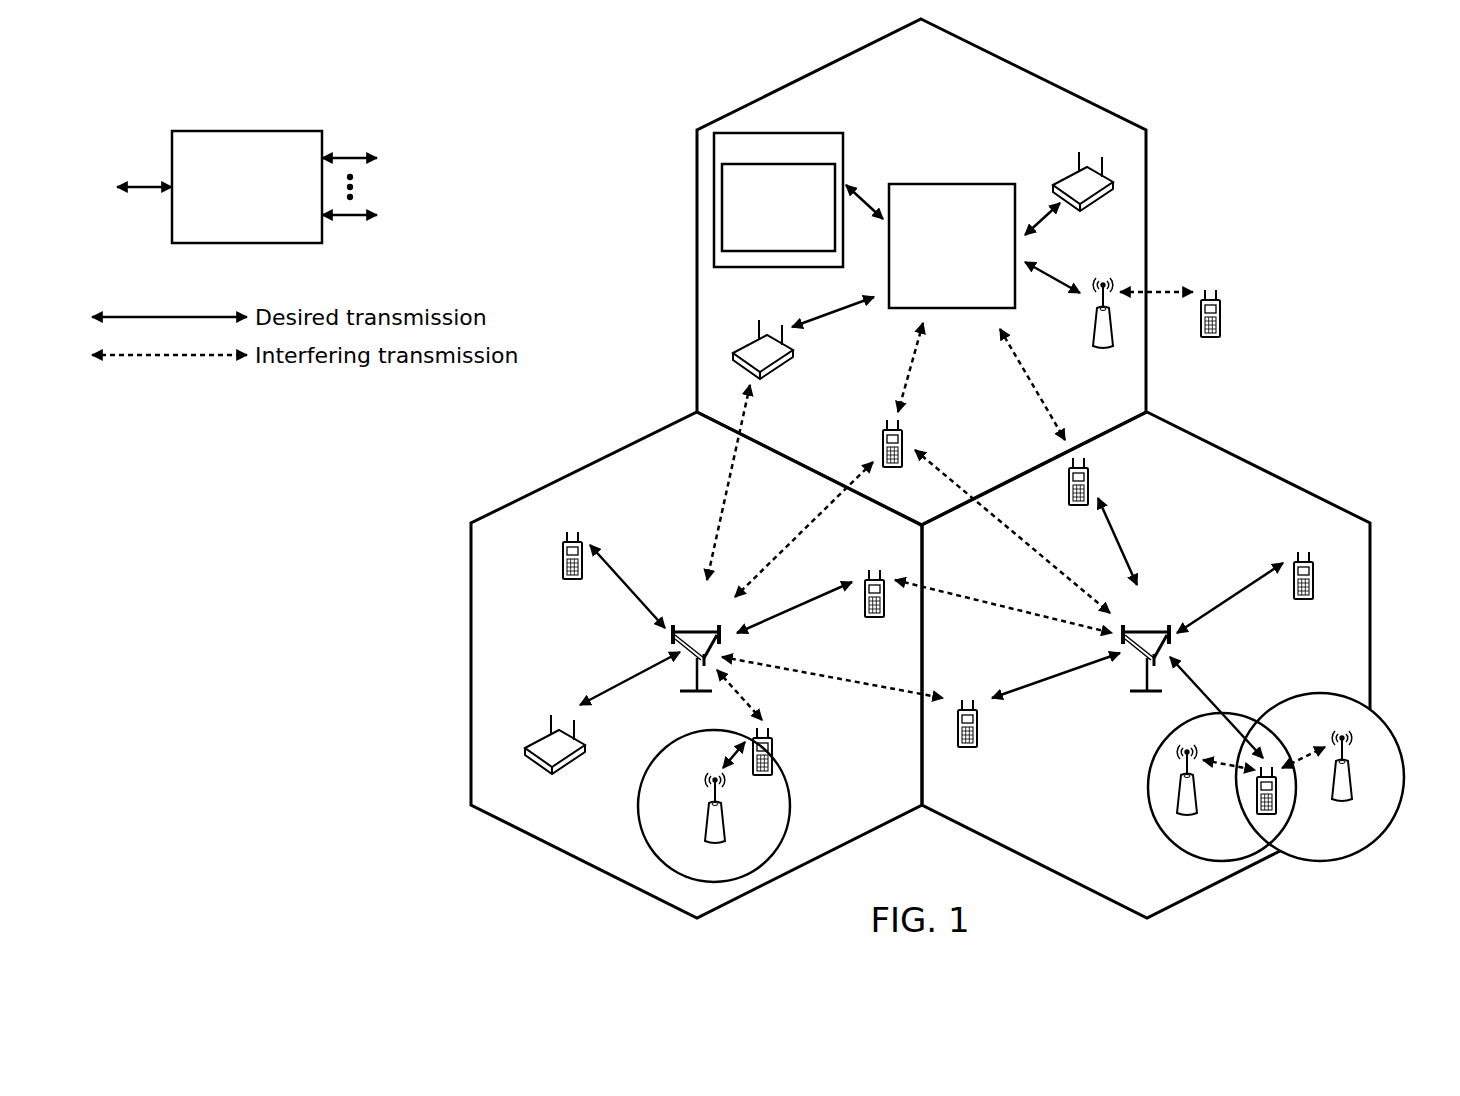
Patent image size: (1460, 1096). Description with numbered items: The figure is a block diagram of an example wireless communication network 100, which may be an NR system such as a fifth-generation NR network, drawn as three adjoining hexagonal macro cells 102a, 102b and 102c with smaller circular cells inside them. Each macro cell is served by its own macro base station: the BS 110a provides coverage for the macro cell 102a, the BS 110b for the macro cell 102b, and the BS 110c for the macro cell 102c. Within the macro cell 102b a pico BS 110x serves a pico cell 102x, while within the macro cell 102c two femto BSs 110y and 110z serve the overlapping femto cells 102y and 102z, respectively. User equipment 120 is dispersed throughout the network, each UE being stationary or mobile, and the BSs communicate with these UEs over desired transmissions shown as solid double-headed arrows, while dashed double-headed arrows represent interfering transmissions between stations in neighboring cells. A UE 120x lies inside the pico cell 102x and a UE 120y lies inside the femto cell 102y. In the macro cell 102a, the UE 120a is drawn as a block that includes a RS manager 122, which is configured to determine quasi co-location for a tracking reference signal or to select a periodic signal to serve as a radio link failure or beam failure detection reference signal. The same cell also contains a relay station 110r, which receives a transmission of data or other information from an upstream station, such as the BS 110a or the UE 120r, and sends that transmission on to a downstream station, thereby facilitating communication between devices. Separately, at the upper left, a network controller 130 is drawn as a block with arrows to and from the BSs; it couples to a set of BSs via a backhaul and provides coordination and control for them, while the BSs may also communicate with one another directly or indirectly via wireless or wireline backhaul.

The wireless communication network 100 is at (1300, 90).
The macro cell 102a is at (1033, 72).
The macro cell 102b is at (582, 468).
The macro cell 102c is at (1258, 467).
The pico cell 102x is at (662, 748).
The femto cell 102y is at (1157, 756).
The femto cell 102z is at (1320, 693).
The macro BS 110a is at (985, 184).
The macro BS 110b is at (690, 631).
The macro BS 110c is at (1141, 631).
The relay station 110r is at (1092, 330).
The pico BS 110x is at (724, 830).
The femto BS 110y is at (1196, 800).
The femto BS 110z is at (1350, 784).
The user equipment 120 is at (745, 340).
The user equipment 120a is at (778, 203).
The user equipment 120r is at (1221, 325).
The user equipment 120x is at (773, 752).
The user equipment 120y is at (1256, 805).
The RS manager 122 is at (805, 251).
The network controller 130 is at (240, 131).